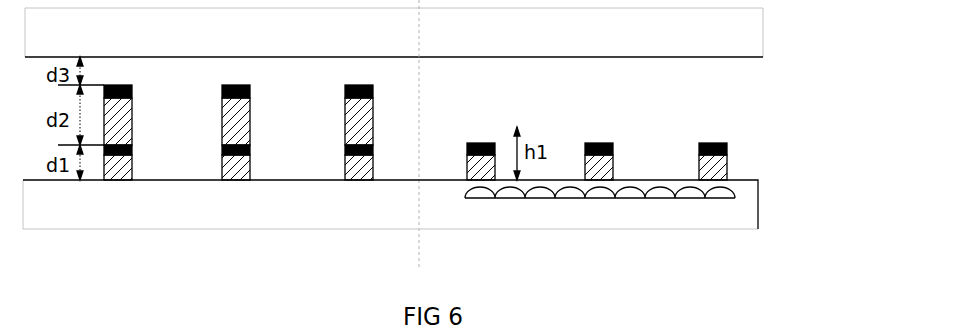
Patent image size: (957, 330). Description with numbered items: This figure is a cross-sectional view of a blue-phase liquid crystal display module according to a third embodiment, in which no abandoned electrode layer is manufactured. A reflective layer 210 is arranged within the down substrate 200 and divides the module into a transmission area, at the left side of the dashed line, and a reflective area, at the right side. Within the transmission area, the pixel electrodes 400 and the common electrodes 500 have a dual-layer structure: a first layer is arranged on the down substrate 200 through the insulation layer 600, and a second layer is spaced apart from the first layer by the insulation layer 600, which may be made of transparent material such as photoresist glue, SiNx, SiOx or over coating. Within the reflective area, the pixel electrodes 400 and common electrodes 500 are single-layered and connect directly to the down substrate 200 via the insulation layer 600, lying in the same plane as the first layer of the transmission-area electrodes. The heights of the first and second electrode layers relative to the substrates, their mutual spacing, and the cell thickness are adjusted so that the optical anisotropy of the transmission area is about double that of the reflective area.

The down substrate 200 is at (733, 217).
The reflective layer 210 is at (562, 198).
The pixel electrodes 400 is at (132, 87).
The common electrodes 500 is at (250, 87).
The insulation layer 600 is at (236, 128).